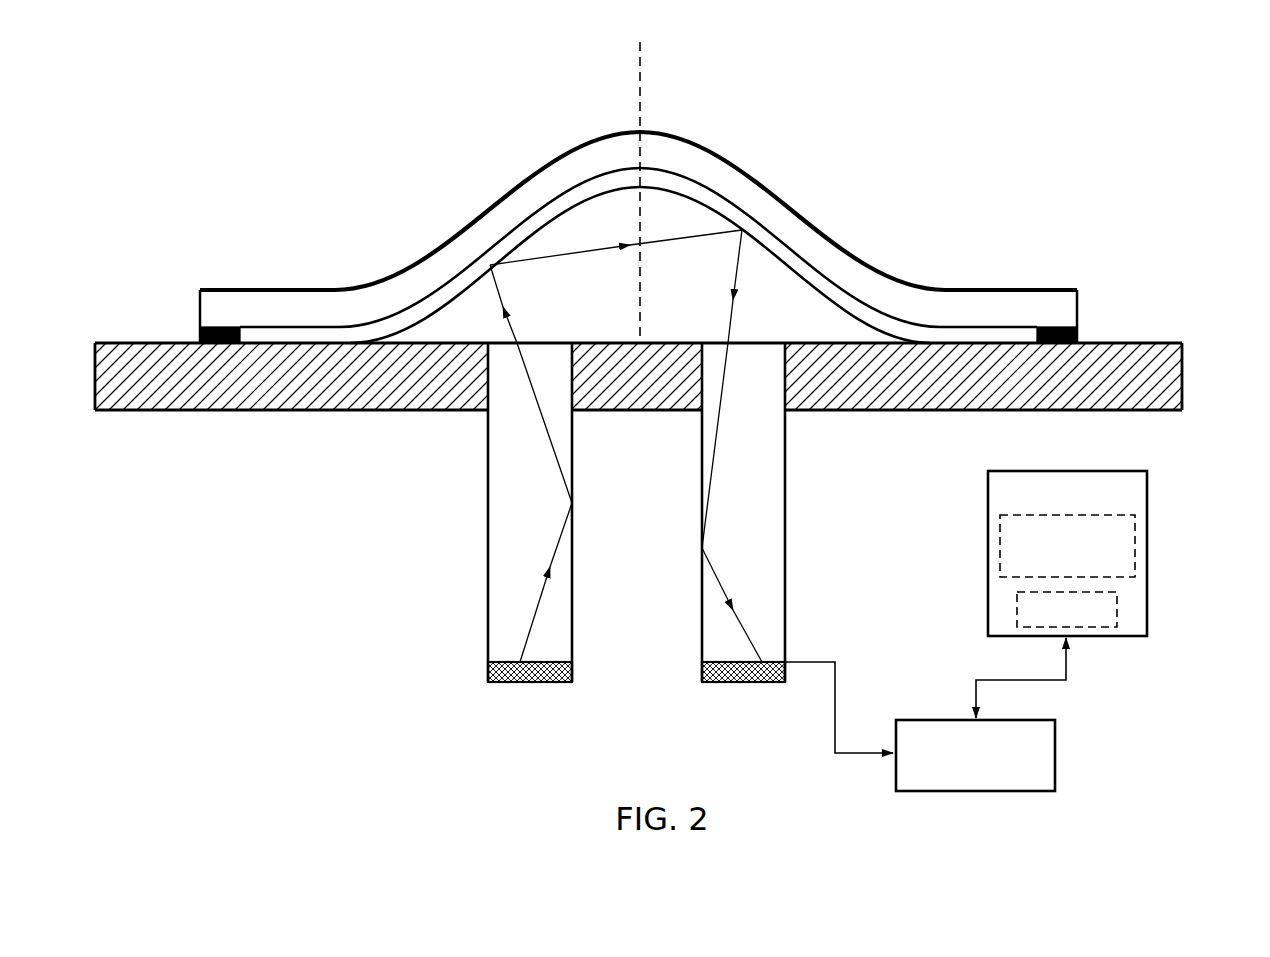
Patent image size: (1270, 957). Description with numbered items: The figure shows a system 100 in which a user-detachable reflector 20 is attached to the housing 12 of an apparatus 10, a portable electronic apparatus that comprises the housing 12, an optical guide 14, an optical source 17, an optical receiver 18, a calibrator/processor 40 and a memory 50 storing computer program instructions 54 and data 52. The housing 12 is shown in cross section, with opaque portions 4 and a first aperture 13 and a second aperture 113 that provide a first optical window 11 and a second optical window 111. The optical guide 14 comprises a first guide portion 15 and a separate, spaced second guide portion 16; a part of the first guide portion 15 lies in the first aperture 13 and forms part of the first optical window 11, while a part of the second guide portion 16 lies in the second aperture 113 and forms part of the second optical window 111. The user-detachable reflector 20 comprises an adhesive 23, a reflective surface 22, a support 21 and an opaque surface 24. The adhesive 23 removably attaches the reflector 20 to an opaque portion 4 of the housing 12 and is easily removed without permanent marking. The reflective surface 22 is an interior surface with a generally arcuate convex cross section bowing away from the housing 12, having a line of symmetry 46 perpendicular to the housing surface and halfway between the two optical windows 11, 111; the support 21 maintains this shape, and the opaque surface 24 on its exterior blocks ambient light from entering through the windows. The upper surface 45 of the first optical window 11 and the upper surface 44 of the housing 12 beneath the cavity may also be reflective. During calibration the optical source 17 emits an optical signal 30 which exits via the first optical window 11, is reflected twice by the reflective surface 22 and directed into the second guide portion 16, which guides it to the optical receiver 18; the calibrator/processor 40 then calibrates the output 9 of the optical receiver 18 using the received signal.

The opaque portion 4 is at (178, 412).
The output 9 is at (836, 698).
The apparatus 10 is at (906, 585).
The first optical window 11 is at (543, 338).
The housing 12 is at (1199, 402).
The first aperture 13 is at (577, 334).
The optical guide 14 is at (440, 679).
The first guide portion 15 is at (487, 550).
The second guide portion 16 is at (787, 540).
The optical source 17 is at (520, 683).
The optical receiver 18 is at (745, 683).
The user-detachable reflector 20 is at (875, 200).
The support 21 is at (437, 252).
The reflective surface 22 is at (594, 196).
The adhesive 23 is at (198, 332).
The opaque surface 24 is at (519, 178).
The optical signal 30 is at (553, 258).
The calibrator/processor 40 is at (1059, 752).
The upper surface of the housing 44 is at (457, 343).
The upper surface of the first optical window 45 is at (557, 343).
The line of symmetry 46 is at (644, 88).
The memory 50 is at (986, 556).
The data 52 is at (1118, 607).
The computer program instructions 54 is at (1137, 549).
The system 100 is at (1152, 240).
The second optical window 111 is at (784, 339).
The second aperture 113 is at (753, 322).